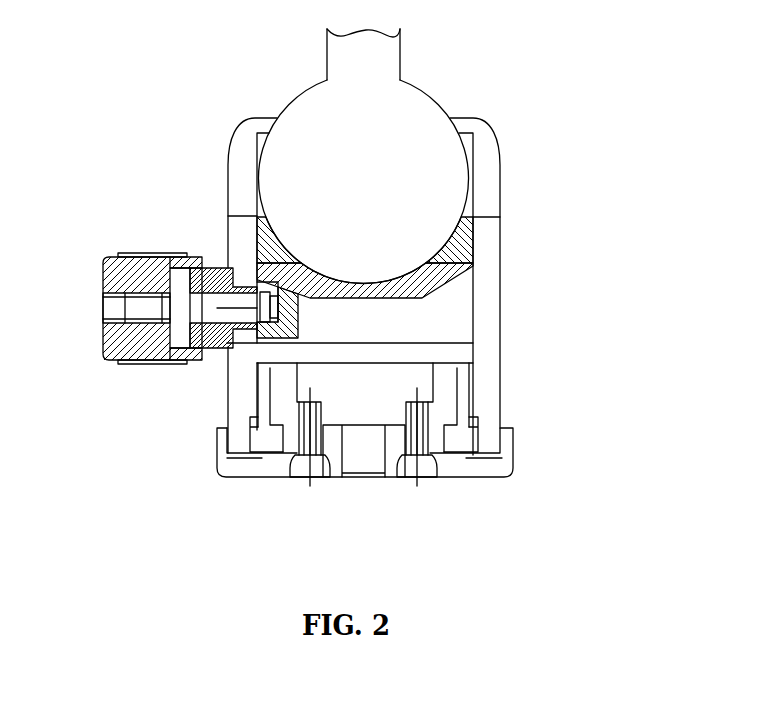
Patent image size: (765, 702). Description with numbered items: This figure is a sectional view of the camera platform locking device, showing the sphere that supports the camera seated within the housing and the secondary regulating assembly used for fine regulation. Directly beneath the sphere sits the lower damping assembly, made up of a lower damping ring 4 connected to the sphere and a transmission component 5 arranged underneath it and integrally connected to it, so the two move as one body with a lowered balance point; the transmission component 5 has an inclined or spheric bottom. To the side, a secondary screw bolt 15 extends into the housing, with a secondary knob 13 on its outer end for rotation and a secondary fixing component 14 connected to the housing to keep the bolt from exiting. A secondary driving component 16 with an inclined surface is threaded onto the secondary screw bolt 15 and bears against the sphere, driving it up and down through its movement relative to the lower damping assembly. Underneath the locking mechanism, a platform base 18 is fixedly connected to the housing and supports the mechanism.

The lower damping ring 4 is at (470, 240).
The transmission component 5 is at (432, 283).
The secondary knob 13 is at (125, 268).
The secondary fixing component 14 is at (220, 266).
The secondary screw bolt 15 is at (190, 308).
The secondary driving component 16 is at (254, 343).
The platform base 18 is at (297, 488).